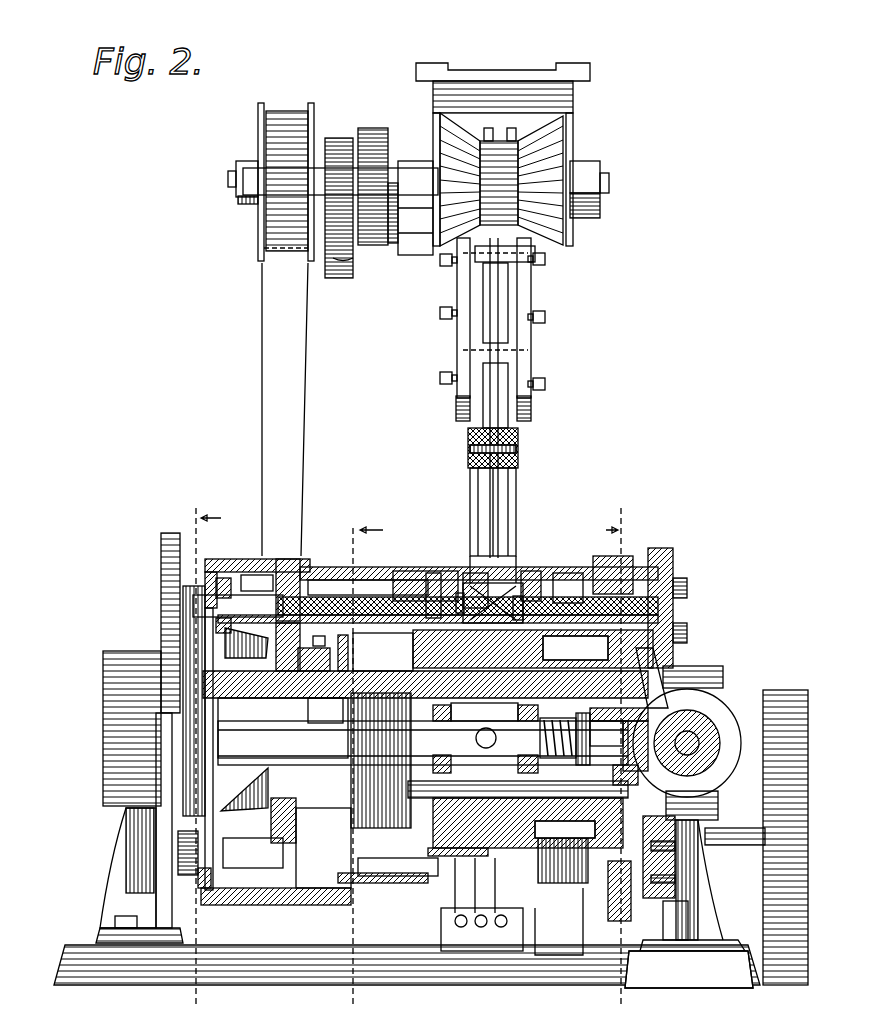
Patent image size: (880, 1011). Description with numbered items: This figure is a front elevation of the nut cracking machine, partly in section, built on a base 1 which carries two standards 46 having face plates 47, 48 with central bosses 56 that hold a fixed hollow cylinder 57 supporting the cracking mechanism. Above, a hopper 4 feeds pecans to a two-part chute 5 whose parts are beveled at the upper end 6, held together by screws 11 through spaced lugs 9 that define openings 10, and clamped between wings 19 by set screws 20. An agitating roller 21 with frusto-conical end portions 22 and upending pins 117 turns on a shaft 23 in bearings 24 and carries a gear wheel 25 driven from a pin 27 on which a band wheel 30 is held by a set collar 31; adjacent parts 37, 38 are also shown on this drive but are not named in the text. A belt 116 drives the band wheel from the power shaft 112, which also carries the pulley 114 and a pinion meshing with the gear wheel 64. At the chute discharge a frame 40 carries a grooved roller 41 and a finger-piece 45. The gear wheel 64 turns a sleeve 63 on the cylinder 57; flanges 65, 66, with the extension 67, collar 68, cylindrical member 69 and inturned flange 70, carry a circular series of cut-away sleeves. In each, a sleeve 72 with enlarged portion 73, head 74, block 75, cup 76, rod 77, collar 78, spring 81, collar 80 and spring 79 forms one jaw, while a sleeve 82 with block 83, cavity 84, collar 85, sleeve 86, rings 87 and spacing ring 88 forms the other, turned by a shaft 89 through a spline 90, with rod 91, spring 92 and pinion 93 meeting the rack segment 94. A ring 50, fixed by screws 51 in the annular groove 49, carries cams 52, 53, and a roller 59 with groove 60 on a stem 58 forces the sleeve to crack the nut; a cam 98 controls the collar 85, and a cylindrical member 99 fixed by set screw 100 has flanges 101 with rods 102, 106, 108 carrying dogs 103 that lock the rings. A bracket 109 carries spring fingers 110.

The base 1 is at (407, 966).
The hopper 4 is at (475, 88).
The chute 5 is at (202, 749).
The beveled upper end 6 is at (628, 750).
The lugs 9 is at (478, 352).
The openings 10 is at (482, 302).
The screws 11 is at (460, 439).
The wings 19 is at (449, 336).
The set screws 20 is at (438, 257).
The agitating roller 21 is at (492, 140).
The expanding end portions 22 is at (432, 130).
The shaft 23 is at (384, 235).
The bearings 24 is at (405, 160).
The gear wheel 25 is at (363, 120).
The pin 27 is at (222, 170).
The band wheel 30 is at (258, 115).
The set collar 31 is at (236, 196).
The lever 37 is at (340, 255).
The gear 38 is at (328, 130).
The frame 40 is at (458, 545).
The roller 41 is at (470, 612).
The finger-piece 45 is at (490, 580).
The standards 46 is at (110, 880).
The face plate 47 is at (185, 604).
The face plate 48 is at (665, 555).
The annular groove 49 is at (680, 578).
The ring 50 is at (680, 622).
The screws 51 is at (679, 635).
The cam projection 52 is at (638, 680).
The cam projection 53 is at (640, 775).
The central boss 56 is at (95, 738).
The cylinder 57 is at (265, 668).
The stem 58 is at (712, 712).
The roller 59 is at (725, 755).
The circumferential groove 60 is at (710, 730).
The sleeve 63 is at (533, 647).
The gear wheel 64 is at (605, 575).
The radial flange 65 is at (458, 568).
The radial flange 66 is at (525, 565).
The axially directed extension 67 is at (318, 897).
The collar 68 is at (295, 820).
The cylindrical member 69 is at (235, 897).
The inturned flange 70 is at (195, 882).
The sleeve 72 is at (572, 568).
The enlarged portion 73 is at (640, 555).
The head 74 is at (655, 550).
The block 75 is at (515, 580).
The cup 76 is at (488, 760).
The rod 77 is at (619, 775).
The collar 78 is at (660, 661).
The spring 79 is at (550, 565).
The collar 80 is at (592, 550).
The spring 81 is at (620, 550).
The sleeve 82 is at (395, 565).
The block 83 is at (410, 565).
The terminal cavity 84 is at (445, 565).
The collar 85 is at (205, 575).
The sleeve 86 is at (261, 713).
The rings 87 is at (360, 570).
The spacing ring 88 is at (383, 778).
The shaft 89 is at (270, 550).
The spline 90 is at (232, 585).
The rod 91 is at (310, 560).
The spring 92 is at (325, 560).
The gear pinion 93 is at (175, 590).
The rack segment 94 is at (175, 650).
The cam 98 is at (244, 803).
The cylindrical member 99 is at (324, 704).
The set screw 100 is at (312, 647).
The radial flanges 101 is at (398, 758).
The rod 102 is at (285, 749).
The dogs 103 is at (423, 748).
The rod 106 is at (484, 708).
The rod 108 is at (498, 827).
The bracket 109 is at (500, 943).
The spring fingers 110 is at (470, 905).
The power shaft 112 is at (667, 855).
The pulley 114 is at (780, 695).
The belt 116 is at (255, 300).
The pins 117 is at (510, 125).